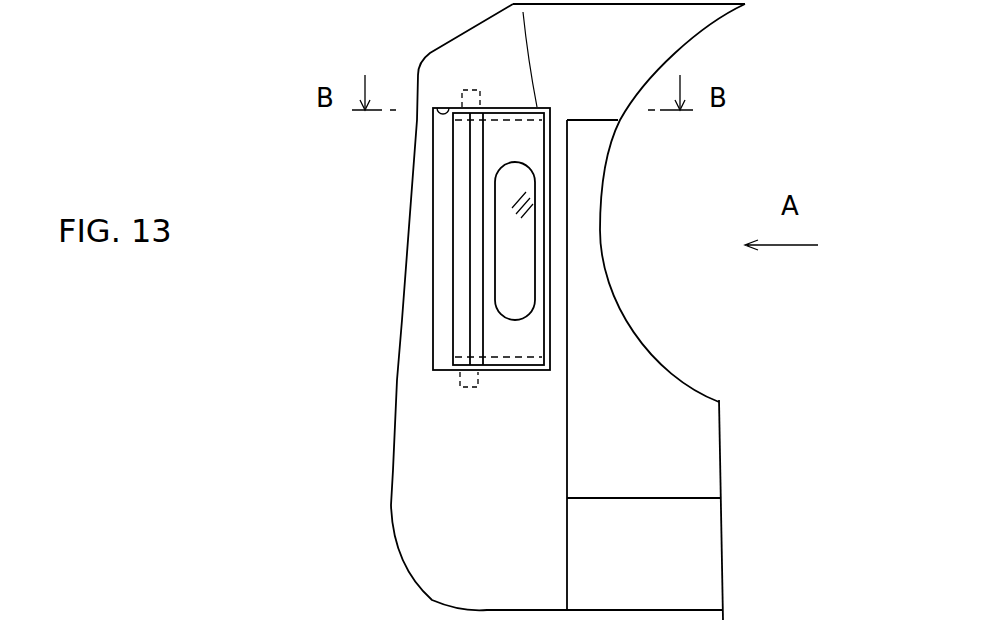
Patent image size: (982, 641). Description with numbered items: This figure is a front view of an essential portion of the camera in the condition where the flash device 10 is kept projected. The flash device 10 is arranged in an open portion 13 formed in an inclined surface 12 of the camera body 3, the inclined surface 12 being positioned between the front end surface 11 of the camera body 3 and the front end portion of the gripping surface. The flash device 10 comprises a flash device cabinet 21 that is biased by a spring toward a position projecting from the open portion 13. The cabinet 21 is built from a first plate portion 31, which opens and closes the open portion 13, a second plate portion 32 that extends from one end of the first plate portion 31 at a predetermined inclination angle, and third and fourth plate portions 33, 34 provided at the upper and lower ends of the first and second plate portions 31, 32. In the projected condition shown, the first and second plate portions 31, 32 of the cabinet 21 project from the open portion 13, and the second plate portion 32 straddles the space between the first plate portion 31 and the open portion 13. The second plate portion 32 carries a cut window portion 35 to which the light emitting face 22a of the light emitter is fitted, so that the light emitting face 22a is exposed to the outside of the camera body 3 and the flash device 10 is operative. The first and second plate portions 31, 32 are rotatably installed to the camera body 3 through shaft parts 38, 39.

The camera body 3 is at (391, 432).
The flash device 10 is at (505, 100).
The front end surface 11 is at (607, 448).
The inclined surface 12 is at (470, 553).
The open portion 13 is at (438, 108).
The flash device cabinet 21 is at (410, 239).
The light emitting face 22a is at (525, 209).
The first plate portion 31 is at (453, 188).
The second plate portion 32 is at (485, 234).
The third plate portion 33 is at (497, 120).
The fourth plate portion 34 is at (497, 357).
The cut window portion 35 is at (495, 268).
The shaft part 38 is at (463, 90).
The shaft part 39 is at (460, 382).